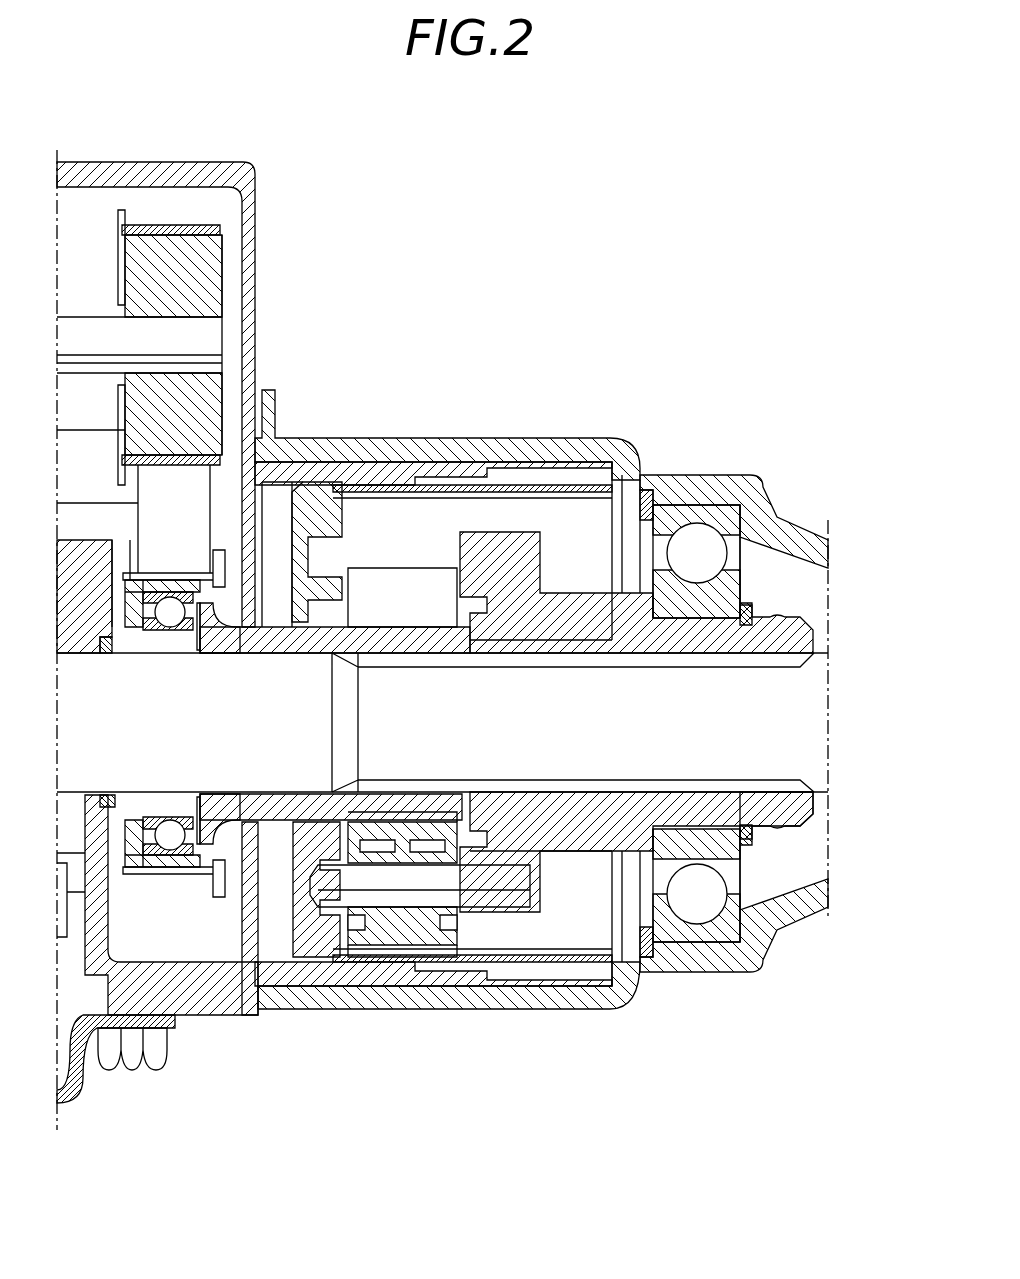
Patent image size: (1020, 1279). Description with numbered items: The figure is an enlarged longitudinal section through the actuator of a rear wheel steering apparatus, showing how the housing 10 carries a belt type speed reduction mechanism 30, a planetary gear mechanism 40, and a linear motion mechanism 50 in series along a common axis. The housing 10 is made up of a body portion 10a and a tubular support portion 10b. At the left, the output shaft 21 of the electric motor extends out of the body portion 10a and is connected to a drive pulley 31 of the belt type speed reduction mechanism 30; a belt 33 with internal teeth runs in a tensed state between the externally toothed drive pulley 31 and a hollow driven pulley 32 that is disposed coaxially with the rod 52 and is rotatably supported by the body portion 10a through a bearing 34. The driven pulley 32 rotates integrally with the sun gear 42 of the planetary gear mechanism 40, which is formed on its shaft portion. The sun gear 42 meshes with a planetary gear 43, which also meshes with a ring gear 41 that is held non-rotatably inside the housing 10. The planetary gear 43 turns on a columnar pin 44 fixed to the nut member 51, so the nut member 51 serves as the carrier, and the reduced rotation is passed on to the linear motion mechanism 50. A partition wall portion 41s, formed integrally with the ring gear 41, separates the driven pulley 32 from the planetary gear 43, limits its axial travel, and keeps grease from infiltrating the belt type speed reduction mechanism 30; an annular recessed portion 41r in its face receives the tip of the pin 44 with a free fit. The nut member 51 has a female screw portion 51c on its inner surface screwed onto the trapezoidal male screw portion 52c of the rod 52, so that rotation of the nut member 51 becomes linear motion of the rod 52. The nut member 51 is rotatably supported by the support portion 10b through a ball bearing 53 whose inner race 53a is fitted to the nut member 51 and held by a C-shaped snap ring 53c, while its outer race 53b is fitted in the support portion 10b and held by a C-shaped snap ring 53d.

The housing 10 is at (178, 599).
The body portion 10a is at (148, 170).
The tubular support portion 10b is at (355, 445).
The output shaft 21 is at (212, 320).
The belt type speed reduction mechanism 30 is at (194, 341).
The drive pulley 31 is at (200, 258).
The driven pulley 32 is at (210, 812).
The belt 33 is at (185, 498).
The bearing 34 is at (172, 850).
The planetary gear mechanism 40 is at (407, 562).
The ring gear 41 is at (390, 965).
The partition wall portion 41s is at (293, 905).
The annular recessed portion 41r is at (318, 905).
The sun gear 42 is at (430, 625).
The planetary gear 43 is at (385, 950).
The pin 44 is at (558, 840).
The linear motion mechanism 50 is at (570, 580).
The nut member 51 is at (600, 860).
The female screw portion 51c is at (765, 785).
The rod 52 is at (825, 690).
The male screw portion 52c is at (689, 798).
The bearing 53 is at (761, 714).
The inner race 53a is at (753, 605).
The outer race 53b is at (700, 510).
The C-shaped snap ring 53c is at (760, 600).
The C-shaped snap ring 53d is at (645, 500).